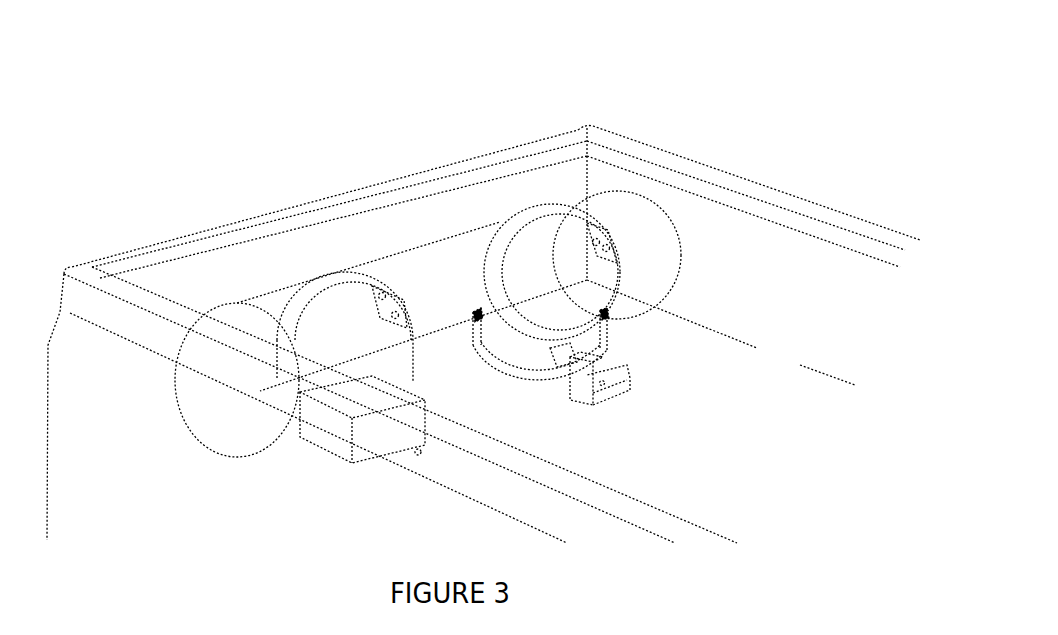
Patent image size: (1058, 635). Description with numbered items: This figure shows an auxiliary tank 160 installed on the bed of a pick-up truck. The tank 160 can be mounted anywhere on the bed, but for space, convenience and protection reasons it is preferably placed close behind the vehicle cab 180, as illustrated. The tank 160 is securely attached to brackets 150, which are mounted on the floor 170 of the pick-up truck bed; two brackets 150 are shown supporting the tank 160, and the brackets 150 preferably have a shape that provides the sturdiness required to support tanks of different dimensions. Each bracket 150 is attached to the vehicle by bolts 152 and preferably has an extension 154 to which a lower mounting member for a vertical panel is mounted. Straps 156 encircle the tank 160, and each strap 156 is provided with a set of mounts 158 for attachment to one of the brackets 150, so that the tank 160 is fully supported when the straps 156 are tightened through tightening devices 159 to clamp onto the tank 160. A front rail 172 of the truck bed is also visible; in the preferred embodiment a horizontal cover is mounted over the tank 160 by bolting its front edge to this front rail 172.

The bracket 150 is at (395, 435).
The bolt 152 is at (543, 362).
The extension 154 is at (613, 380).
The strap 156 is at (578, 218).
The mount 158 is at (613, 345).
The tightening device 159 is at (615, 255).
The tank 160 is at (632, 218).
The floor 170 is at (757, 470).
The front rail 172 is at (250, 219).
The vehicle cab 180 is at (300, 32).